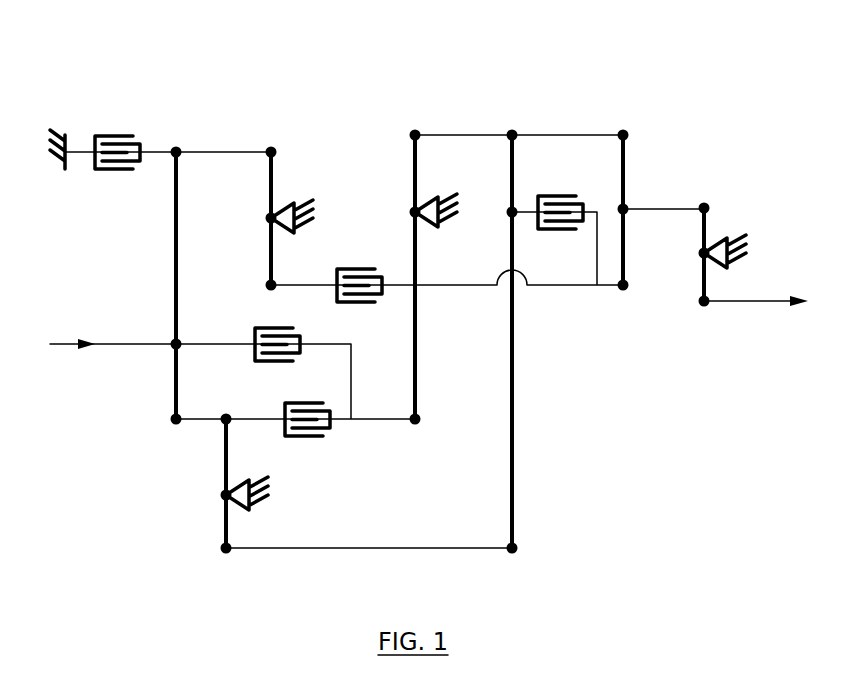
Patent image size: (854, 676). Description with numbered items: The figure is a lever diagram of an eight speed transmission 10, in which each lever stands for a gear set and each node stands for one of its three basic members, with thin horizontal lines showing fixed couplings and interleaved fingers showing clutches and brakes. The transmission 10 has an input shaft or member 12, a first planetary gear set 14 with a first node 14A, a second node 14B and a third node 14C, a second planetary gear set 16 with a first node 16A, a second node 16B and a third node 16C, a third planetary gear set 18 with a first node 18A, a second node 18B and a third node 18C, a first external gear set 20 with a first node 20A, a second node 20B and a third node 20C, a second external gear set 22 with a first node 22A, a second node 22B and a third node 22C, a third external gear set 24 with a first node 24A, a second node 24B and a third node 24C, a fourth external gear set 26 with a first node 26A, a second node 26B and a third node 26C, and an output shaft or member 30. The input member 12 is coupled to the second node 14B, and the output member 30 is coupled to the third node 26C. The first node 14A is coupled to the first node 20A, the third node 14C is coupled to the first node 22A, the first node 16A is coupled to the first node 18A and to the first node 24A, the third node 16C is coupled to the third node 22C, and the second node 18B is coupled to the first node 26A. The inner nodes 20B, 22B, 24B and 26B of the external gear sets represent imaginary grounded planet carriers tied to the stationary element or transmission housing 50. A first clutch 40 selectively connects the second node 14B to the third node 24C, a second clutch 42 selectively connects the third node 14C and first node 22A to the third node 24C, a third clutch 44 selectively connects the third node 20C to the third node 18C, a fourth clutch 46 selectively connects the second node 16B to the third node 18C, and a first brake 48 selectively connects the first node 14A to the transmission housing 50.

The eight speed transmission 10 is at (226, 60).
The input shaft or member 12 is at (142, 342).
The first planetary gear set 14 is at (172, 440).
The first node of first planetary gear set 14A is at (178, 150).
The second node of first planetary gear set 14B is at (178, 342).
The third node of first planetary gear set 14C is at (176, 416).
The second planetary gear set 16 is at (531, 390).
The first node of second planetary gear set 16A is at (514, 133).
The second node of second planetary gear set 16B is at (510, 214).
The third node of second planetary gear set 16C is at (514, 546).
The third planetary gear set 18 is at (619, 305).
The first node of third planetary gear set 18A is at (625, 133).
The second node of third planetary gear set 18B is at (625, 207).
The third node of third planetary gear set 18C is at (625, 283).
The first external gear set 20 is at (277, 130).
The first node of first external gear set 20A is at (273, 150).
The second node of first external gear set 20B is at (269, 220).
The third node of first external gear set 20C is at (273, 283).
The second external gear set 22 is at (282, 480).
The first node of second external gear set 22A is at (228, 416).
The second node of second external gear set 22B is at (224, 497).
The third node of second external gear set 22C is at (228, 549).
The third external gear set 24 is at (414, 450).
The first node of third external gear set 24A is at (413, 133).
The second node of third external gear set 24B is at (413, 210).
The third node of third external gear set 24C is at (417, 416).
The fourth external gear set 26 is at (705, 320).
The first node of fourth external gear set 26A is at (706, 206).
The second node of fourth external gear set 26B is at (702, 252).
The third node of fourth external gear set 26C is at (702, 302).
The output shaft or member 30 is at (757, 303).
The first clutch 40 is at (276, 328).
The second clutch 42 is at (314, 436).
The third clutch 44 is at (355, 302).
The fourth clutch 46 is at (562, 196).
The first brake 48 is at (118, 169).
The stationary element or transmission housing 50 is at (66, 170).